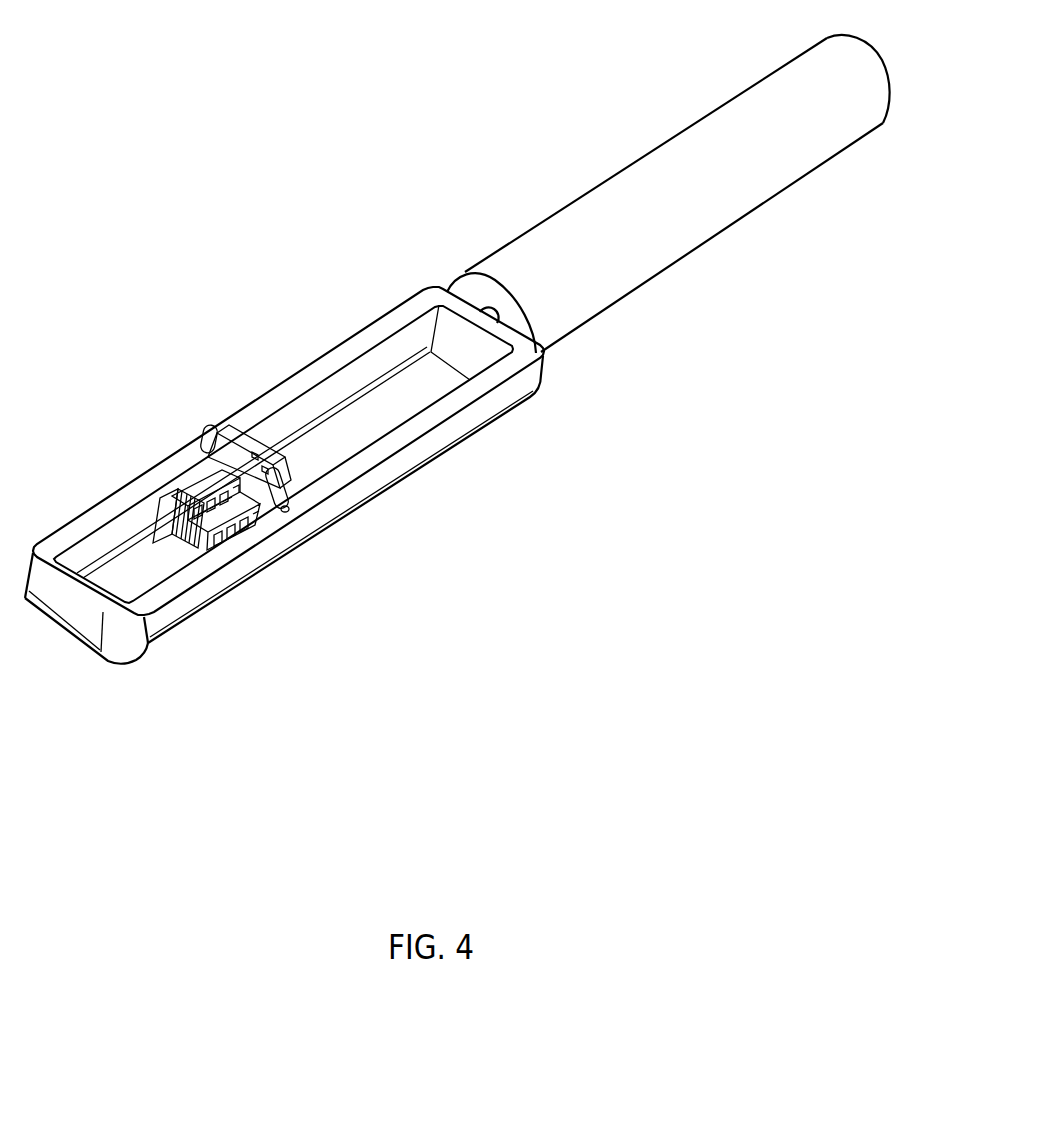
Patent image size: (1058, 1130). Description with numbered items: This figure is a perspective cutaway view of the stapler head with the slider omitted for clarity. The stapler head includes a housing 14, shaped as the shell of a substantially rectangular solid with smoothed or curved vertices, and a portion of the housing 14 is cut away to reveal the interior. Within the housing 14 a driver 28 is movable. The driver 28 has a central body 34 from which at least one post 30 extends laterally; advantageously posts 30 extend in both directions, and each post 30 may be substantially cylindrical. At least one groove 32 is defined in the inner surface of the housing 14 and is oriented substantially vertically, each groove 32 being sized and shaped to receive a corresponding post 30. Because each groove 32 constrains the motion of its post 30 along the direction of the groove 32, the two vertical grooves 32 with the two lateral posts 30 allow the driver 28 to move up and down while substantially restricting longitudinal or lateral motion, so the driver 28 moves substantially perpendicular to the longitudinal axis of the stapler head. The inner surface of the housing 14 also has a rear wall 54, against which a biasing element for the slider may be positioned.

The housing 14 is at (446, 451).
The driver 28 is at (239, 424).
The post 30 is at (205, 432).
The groove 32 is at (287, 507).
The central body 34 is at (251, 452).
The rear wall 54 is at (483, 358).